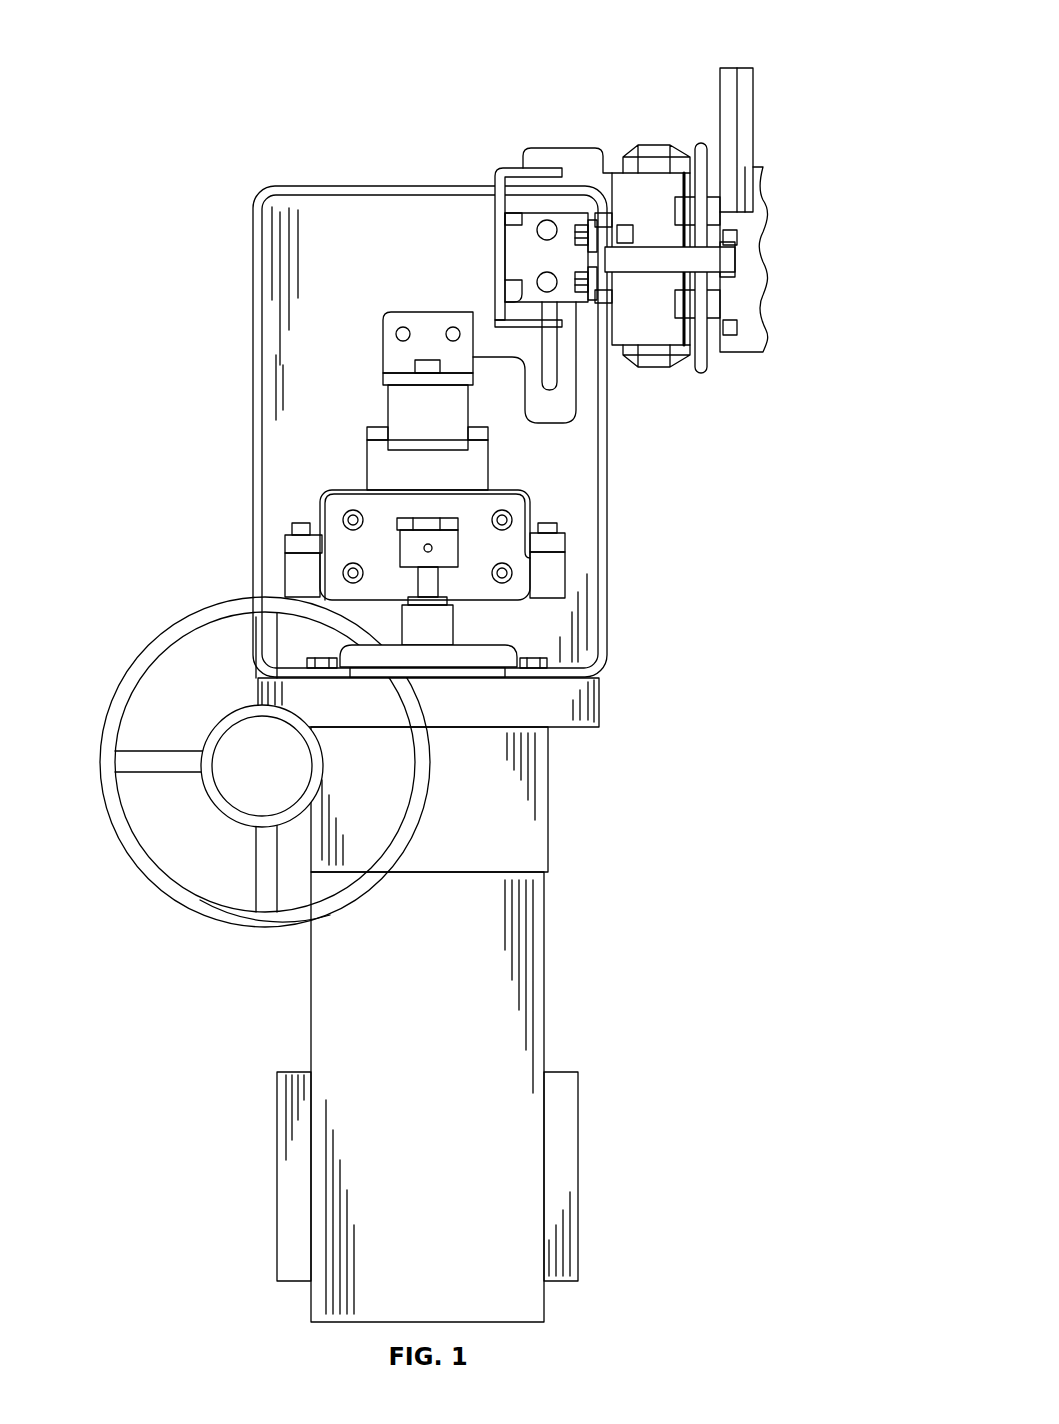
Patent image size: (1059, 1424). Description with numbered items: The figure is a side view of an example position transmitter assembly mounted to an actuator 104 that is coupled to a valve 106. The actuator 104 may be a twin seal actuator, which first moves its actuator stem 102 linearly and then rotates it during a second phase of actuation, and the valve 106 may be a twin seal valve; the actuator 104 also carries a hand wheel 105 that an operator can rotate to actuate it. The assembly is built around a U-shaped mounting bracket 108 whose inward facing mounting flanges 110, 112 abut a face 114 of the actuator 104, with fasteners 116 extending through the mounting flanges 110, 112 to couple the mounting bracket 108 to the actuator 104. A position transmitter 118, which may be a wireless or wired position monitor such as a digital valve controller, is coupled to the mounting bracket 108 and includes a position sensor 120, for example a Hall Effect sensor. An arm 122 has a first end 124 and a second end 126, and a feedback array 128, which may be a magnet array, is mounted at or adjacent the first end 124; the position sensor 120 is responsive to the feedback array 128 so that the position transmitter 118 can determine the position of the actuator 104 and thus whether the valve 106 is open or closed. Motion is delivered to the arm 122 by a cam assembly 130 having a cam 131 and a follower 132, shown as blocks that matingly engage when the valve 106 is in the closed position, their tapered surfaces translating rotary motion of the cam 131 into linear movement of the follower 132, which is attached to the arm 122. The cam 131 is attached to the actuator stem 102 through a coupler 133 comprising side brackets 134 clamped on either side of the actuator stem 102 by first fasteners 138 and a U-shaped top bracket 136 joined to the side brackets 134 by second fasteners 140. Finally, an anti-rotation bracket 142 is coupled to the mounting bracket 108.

The actuator stem 102 is at (437, 636).
The actuator 104 is at (530, 828).
The hand wheel 105 is at (263, 924).
The valve 106 is at (527, 960).
The mounting bracket 108 is at (250, 241).
The mounting flange 110 is at (293, 668).
The mounting flange 112 is at (568, 665).
The face 114 is at (393, 697).
The fasteners 116 is at (275, 607).
The position transmitter 118 is at (737, 258).
The position sensor 120 is at (635, 235).
The arm 122 is at (570, 347).
The first end 124 is at (548, 148).
The second end 126 is at (558, 412).
The feedback array 128 is at (660, 116).
The cam assembly 130 is at (370, 415).
The cam 131 is at (460, 475).
The follower 132 is at (403, 400).
The coupler 133 is at (276, 545).
The side brackets 134 is at (543, 592).
The top bracket 136 is at (345, 487).
The first fasteners 138 is at (512, 572).
The second fasteners 140 is at (295, 522).
The anti-rotation bracket 142 is at (505, 168).